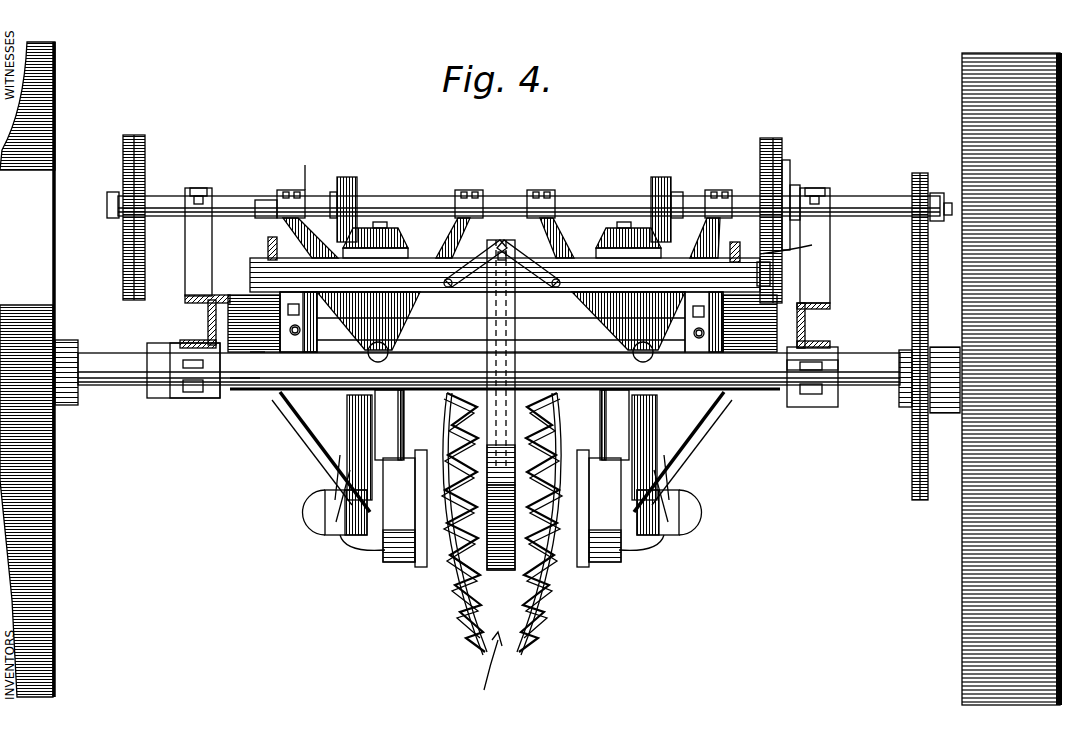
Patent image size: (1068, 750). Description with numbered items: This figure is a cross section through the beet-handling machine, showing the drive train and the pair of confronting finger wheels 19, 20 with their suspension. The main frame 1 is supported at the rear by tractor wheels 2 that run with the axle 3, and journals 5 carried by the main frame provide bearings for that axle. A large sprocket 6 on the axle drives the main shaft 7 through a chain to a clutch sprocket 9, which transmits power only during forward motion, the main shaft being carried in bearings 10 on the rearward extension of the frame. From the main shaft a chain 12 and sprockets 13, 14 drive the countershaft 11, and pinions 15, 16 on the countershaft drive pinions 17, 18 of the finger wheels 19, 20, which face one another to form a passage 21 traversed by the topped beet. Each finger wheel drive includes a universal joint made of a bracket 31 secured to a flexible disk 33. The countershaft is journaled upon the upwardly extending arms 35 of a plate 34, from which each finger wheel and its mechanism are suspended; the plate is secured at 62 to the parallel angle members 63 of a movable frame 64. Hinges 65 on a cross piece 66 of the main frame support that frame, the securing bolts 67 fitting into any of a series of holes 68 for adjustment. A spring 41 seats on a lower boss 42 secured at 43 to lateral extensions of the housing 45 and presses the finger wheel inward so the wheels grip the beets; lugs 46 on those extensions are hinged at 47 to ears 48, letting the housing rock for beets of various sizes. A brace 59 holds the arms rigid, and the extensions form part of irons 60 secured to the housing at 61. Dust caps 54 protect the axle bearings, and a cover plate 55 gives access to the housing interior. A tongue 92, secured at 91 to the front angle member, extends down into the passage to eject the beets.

The main frame 1 is at (208, 318).
The tractor wheels 2 is at (56, 540).
The axle 3 is at (98, 388).
The journals 5 is at (178, 398).
The large sprocket 6 is at (906, 449).
The main shaft 7 is at (160, 204).
The clutch sprocket 9 is at (918, 184).
The bearings 10 is at (200, 188).
The countershaft 11 is at (265, 206).
The chain 12 is at (790, 165).
The sprocket 13 is at (798, 190).
The sprocket 14 is at (775, 140).
The pinion 15 is at (345, 177).
The pinion 16 is at (666, 177).
The pinion 17 is at (380, 228).
The pinion 18 is at (606, 228).
The finger wheel 19 is at (468, 645).
The finger wheel 20 is at (530, 645).
The passage 21 is at (489, 670).
The bracket 31 is at (620, 327).
The flexible disk 33 is at (510, 310).
The plate 34 is at (400, 250).
The arms 35 is at (292, 196).
The spring 41 is at (246, 302).
The boss 42 is at (250, 380).
The securing point 43 is at (256, 355).
The housing 45 is at (648, 470).
The lugs 46 is at (295, 345).
The hinge 47 is at (377, 395).
The ears 48 is at (350, 460).
The dust caps 54 is at (318, 520).
The cover plate 55 is at (404, 560).
The brace 59 is at (322, 448).
The irons 60 is at (328, 520).
The securing point 61 is at (325, 530).
The securing point 62 is at (438, 252).
The angle members 63 is at (452, 250).
The movable frame 64 is at (268, 240).
The hinges 65 is at (814, 246).
The cross piece 66 is at (312, 250).
The securing bolts 67 is at (205, 333).
The holes 68 is at (295, 340).
The securing point 91 is at (503, 250).
The tongue 92 is at (458, 590).